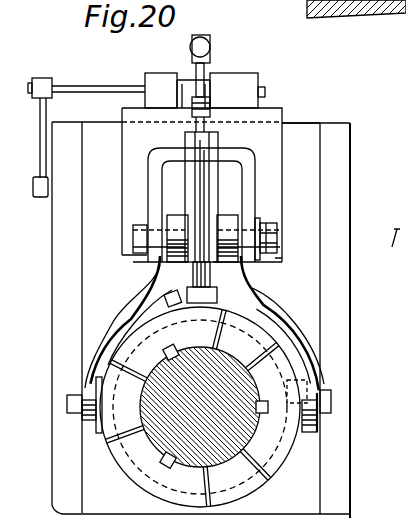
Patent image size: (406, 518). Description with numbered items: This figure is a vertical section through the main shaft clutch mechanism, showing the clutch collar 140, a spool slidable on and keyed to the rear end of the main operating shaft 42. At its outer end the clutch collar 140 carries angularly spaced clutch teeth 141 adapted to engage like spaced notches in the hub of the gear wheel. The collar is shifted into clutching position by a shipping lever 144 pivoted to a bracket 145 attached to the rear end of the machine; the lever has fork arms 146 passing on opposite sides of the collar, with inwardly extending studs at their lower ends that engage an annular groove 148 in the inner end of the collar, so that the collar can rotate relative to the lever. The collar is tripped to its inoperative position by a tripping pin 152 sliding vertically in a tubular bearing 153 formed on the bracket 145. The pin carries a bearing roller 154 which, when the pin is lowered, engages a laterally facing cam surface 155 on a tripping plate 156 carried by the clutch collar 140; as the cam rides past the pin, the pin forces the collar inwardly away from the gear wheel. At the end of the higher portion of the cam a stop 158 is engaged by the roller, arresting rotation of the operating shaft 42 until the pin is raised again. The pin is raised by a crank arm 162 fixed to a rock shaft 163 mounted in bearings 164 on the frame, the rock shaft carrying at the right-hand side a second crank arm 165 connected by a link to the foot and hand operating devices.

The main operating shaft 42 is at (163, 436).
The clutch collar 140 is at (293, 453).
The clutch teeth 141 is at (262, 498).
The shipping lever 144 is at (260, 128).
The bracket 145 is at (276, 207).
The fork arms 146 is at (143, 289).
The annular groove 148 is at (192, 48).
The tripping pin 152 is at (157, 270).
The tubular bearing 153 is at (208, 197).
The bearing roller 154 is at (196, 277).
The cam surface 155 is at (230, 300).
The tripping plate 156 is at (252, 306).
The stop 158 is at (145, 296).
The crank arm 162 is at (205, 78).
The rock shaft 163 is at (97, 85).
The bearings 164 is at (247, 78).
The crank arm 165 is at (46, 108).